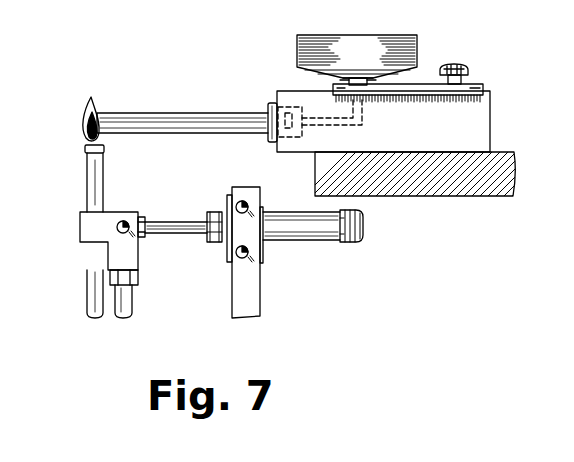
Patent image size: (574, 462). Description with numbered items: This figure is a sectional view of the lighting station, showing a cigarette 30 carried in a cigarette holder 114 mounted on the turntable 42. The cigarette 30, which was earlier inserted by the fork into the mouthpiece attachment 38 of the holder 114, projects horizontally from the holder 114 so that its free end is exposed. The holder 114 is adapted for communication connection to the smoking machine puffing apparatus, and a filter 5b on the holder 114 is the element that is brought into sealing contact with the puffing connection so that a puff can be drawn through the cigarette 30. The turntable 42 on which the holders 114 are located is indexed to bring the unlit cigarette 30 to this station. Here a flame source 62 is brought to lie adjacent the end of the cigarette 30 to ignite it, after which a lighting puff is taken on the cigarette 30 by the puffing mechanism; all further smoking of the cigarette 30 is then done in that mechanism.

The filter 5b is at (418, 37).
The cigarette 30 is at (160, 112).
The mouthpiece attachment 38 is at (271, 104).
The cigarette holder 114 is at (491, 118).
The turntable 42 is at (455, 195).
The flame source 62 is at (88, 118).